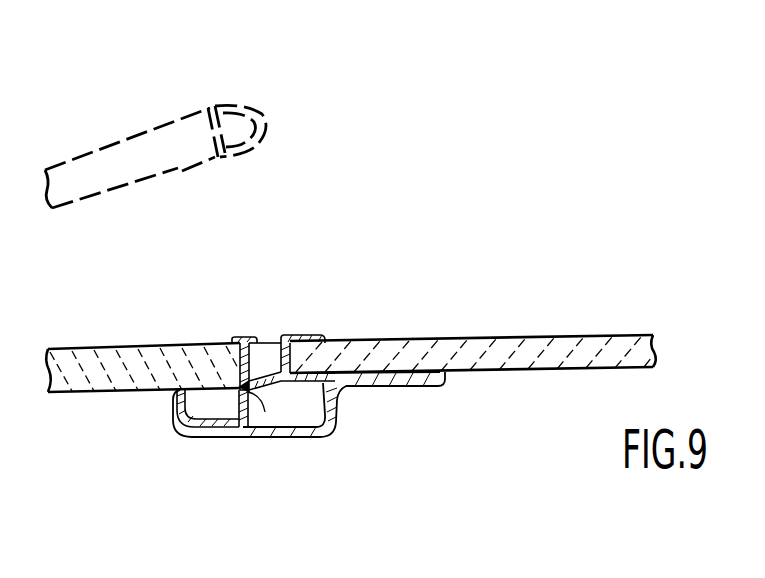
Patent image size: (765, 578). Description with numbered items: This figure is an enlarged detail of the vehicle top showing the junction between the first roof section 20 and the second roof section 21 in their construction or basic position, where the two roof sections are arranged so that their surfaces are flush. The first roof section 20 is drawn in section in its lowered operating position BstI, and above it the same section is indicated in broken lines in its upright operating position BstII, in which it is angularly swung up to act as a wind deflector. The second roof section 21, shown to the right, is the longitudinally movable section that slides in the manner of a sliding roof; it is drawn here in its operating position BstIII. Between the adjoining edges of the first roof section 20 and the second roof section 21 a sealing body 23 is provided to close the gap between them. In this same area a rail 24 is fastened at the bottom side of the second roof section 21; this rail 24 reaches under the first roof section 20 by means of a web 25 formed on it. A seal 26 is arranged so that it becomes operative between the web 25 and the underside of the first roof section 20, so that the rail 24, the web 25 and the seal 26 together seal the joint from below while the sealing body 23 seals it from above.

The operating position Bst II BstII is at (140, 134).
The operating position Bst I BstI is at (111, 347).
The operating position Bst III BstIII is at (482, 332).
The first roof section 20 is at (170, 347).
The second roof section 21 is at (393, 341).
The sealing body 23 is at (262, 340).
The rail 24 is at (327, 418).
The web 25 is at (237, 440).
The seal 26 is at (248, 412).